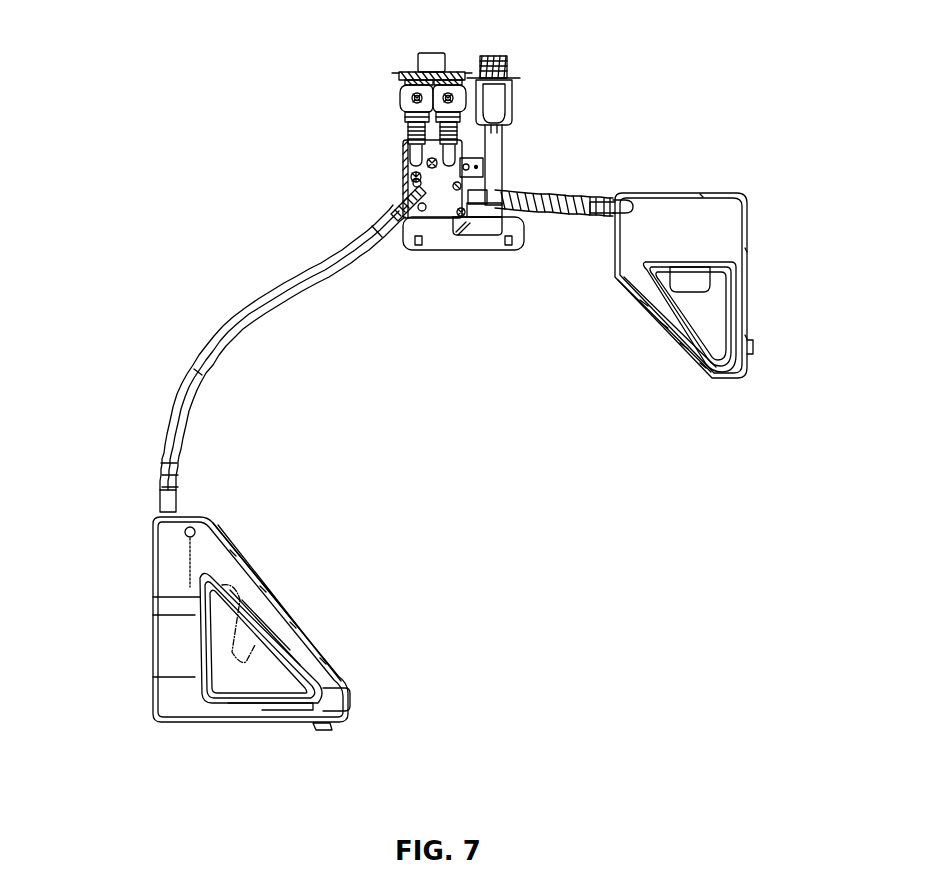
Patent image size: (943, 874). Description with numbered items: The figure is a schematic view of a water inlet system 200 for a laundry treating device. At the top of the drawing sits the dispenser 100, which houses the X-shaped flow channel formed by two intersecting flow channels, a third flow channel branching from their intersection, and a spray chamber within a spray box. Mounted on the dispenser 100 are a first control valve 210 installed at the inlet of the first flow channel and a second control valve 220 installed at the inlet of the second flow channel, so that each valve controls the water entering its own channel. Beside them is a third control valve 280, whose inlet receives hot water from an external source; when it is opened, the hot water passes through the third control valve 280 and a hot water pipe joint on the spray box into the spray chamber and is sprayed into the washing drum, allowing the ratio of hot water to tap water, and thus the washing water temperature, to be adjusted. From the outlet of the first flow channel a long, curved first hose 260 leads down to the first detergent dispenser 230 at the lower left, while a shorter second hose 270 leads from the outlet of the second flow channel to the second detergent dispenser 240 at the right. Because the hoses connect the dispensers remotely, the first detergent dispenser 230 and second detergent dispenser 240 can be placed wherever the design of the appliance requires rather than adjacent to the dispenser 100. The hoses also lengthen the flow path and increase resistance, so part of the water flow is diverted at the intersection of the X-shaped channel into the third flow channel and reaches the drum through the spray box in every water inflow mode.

The dispenser 100 is at (399, 175).
The water inlet system 200 is at (607, 131).
The first control valve 210 is at (459, 74).
The second control valve 220 is at (403, 73).
The first detergent dispenser 230 is at (172, 578).
The second detergent dispenser 240 is at (725, 227).
The first hose 260 is at (229, 332).
The second hose 270 is at (552, 203).
The third control valve 280 is at (498, 103).